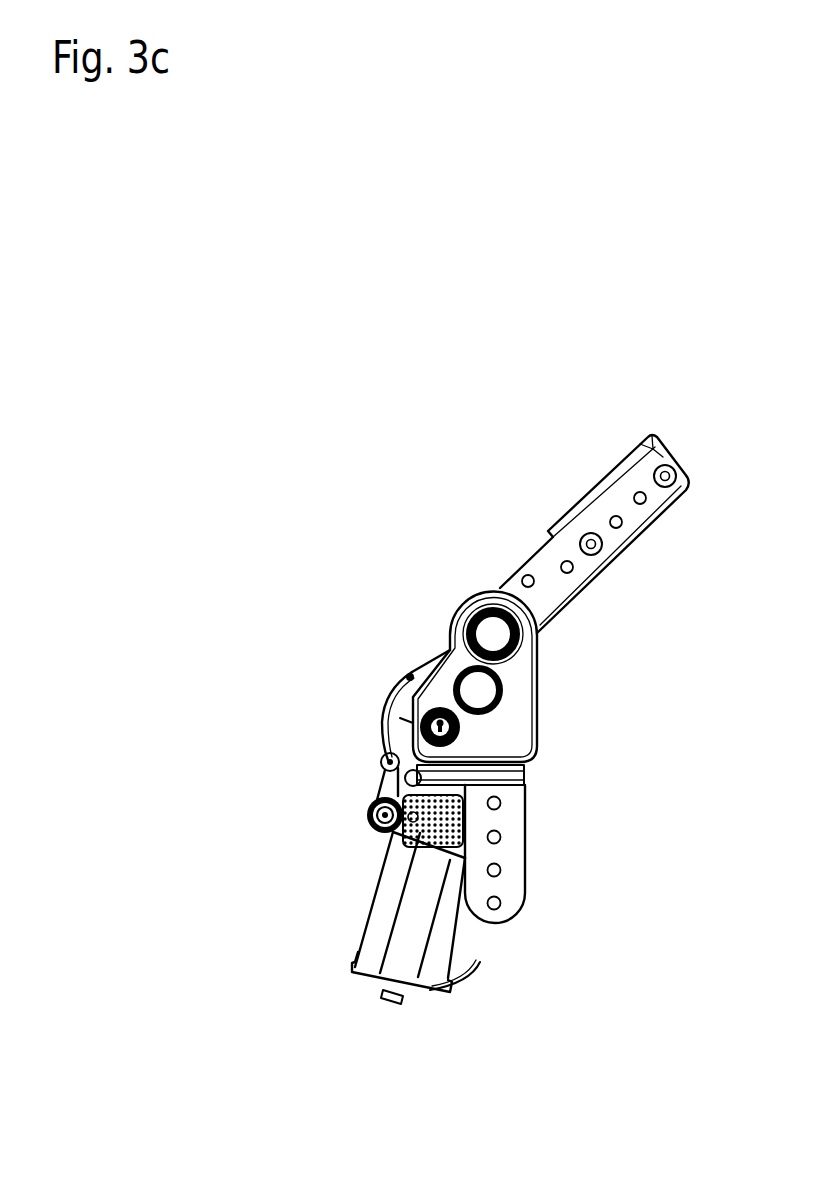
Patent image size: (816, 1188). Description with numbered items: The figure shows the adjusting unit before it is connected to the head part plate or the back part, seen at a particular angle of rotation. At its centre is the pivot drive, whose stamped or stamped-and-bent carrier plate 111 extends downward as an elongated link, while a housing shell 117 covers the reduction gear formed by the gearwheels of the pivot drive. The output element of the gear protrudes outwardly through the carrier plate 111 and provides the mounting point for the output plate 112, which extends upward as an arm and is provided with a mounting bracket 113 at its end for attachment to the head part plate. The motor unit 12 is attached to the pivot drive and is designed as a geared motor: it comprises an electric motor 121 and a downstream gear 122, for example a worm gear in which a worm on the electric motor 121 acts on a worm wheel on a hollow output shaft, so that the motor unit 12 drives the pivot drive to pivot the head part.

The motor unit 12 is at (372, 679).
The carrier plate 111 is at (503, 882).
The output plate 112 is at (595, 523).
The mounting bracket 113 is at (652, 434).
The housing shell 117 is at (513, 720).
The electric motor 121 is at (383, 923).
The gear 122 is at (400, 728).